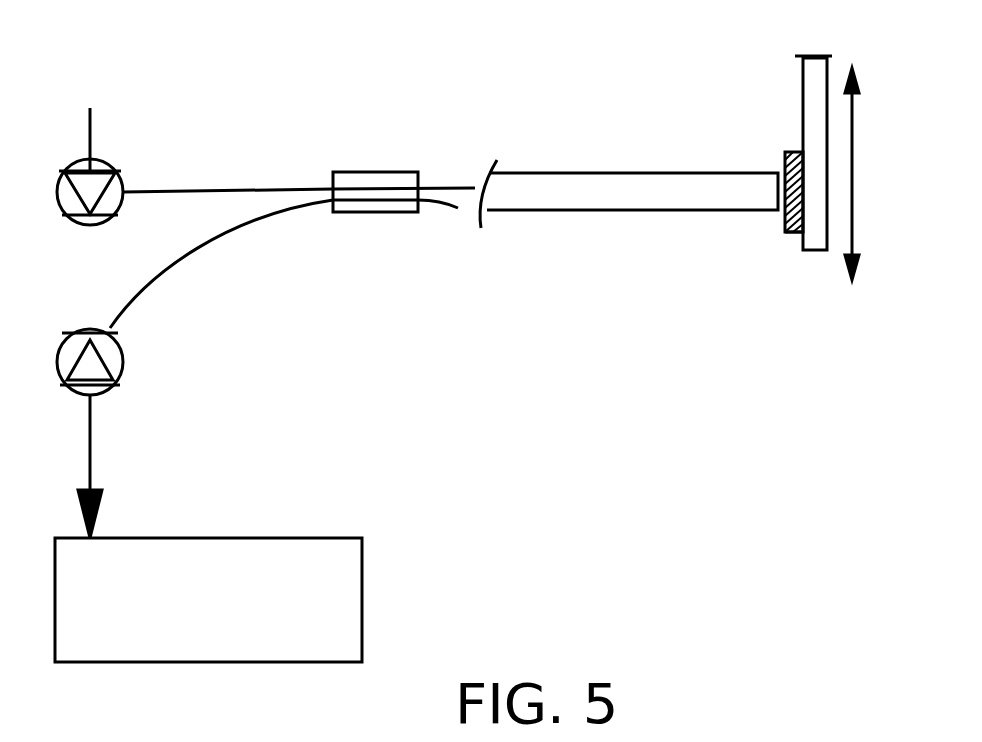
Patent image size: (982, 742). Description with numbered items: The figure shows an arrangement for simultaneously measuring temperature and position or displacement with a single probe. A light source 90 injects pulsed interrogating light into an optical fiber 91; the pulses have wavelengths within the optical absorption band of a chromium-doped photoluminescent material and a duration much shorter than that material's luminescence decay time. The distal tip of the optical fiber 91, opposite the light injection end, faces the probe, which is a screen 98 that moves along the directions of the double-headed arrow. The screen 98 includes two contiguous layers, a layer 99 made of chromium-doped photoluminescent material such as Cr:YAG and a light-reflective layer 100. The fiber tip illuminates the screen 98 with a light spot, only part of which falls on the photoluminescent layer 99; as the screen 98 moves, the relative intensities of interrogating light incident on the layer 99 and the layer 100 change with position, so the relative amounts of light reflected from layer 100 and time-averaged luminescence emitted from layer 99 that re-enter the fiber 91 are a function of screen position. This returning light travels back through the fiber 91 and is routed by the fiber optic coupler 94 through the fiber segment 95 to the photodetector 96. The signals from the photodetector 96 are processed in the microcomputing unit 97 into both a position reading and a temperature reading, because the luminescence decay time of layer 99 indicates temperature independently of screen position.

The light source 90 is at (117, 163).
The optical fiber 91 is at (223, 183).
The fiber optic coupler 94 is at (375, 163).
The fiber segment 95 is at (257, 230).
The photodetector 96 is at (130, 368).
The microcomputing unit 97 is at (320, 527).
The screen 98 is at (792, 78).
The photoluminescent layer 99 is at (781, 150).
The light-reflective layer 100 is at (781, 228).